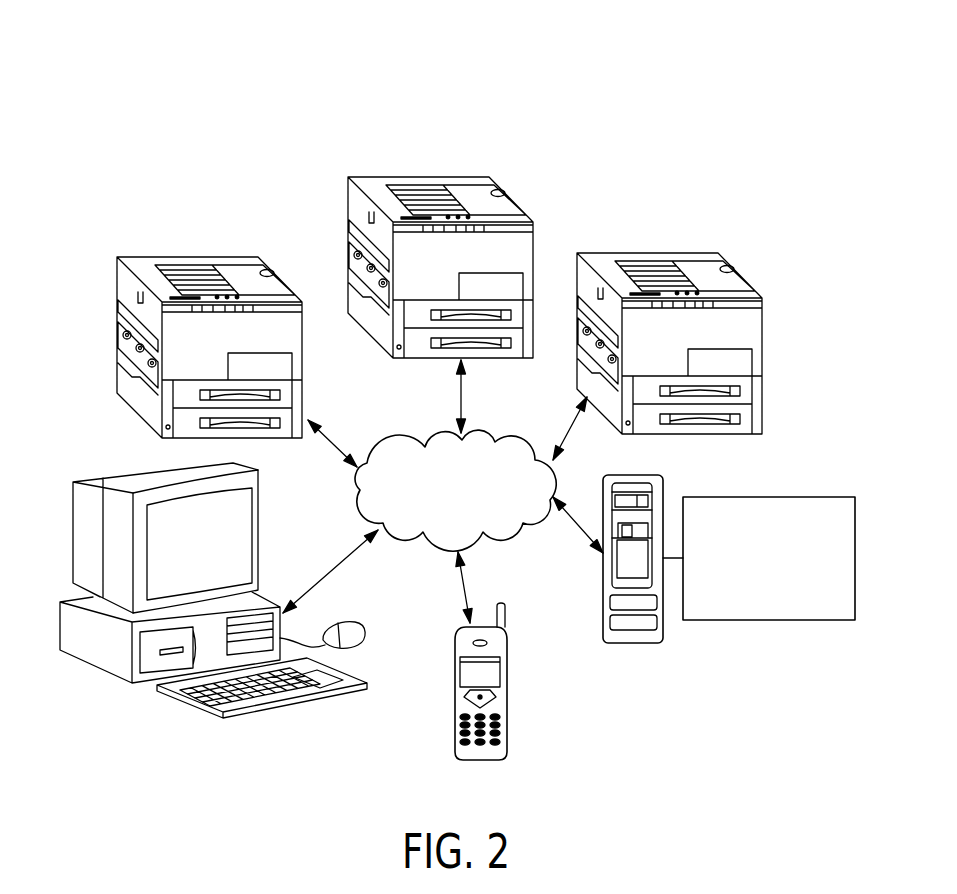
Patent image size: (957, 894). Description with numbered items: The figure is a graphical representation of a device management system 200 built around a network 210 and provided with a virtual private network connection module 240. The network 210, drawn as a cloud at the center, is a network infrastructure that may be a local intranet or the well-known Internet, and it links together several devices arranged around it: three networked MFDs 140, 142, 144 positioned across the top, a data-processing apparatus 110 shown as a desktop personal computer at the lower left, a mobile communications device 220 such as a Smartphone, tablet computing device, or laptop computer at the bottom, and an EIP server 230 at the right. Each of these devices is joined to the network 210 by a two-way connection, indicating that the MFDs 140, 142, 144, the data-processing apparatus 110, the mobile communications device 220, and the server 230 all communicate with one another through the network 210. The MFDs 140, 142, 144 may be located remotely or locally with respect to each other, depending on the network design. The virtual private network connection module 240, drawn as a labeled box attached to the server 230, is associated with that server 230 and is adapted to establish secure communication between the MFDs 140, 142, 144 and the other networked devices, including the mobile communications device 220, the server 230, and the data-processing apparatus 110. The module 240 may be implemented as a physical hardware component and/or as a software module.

The device management system 200 is at (623, 78).
The data-processing apparatus 110 is at (260, 508).
The networked MFD 140 is at (470, 177).
The networked MFD 142 is at (227, 257).
The networked MFD 144 is at (697, 253).
The network 210 is at (520, 428).
The mobile communications device 220 is at (505, 623).
The EIP server 230 is at (663, 480).
The virtual private network connection module 240 is at (818, 497).